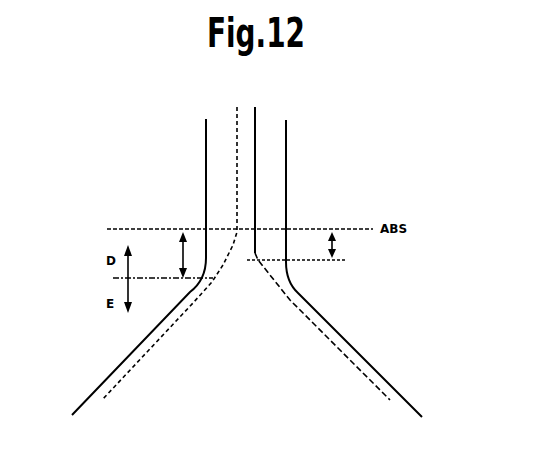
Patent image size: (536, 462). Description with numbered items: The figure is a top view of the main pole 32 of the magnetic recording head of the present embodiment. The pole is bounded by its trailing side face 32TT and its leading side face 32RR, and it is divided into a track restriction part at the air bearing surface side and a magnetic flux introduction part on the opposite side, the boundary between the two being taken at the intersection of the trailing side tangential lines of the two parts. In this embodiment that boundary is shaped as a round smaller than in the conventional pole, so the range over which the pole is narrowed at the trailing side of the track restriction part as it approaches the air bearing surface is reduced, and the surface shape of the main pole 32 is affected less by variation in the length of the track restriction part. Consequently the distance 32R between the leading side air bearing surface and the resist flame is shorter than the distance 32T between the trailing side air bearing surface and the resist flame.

The main pole 32 is at (165, 261).
The leading side face of the main pole 32RR is at (255, 147).
The trailing side face of the main pole 32TT is at (286, 187).
The distance between the trailing side ABS and the resist flame 32T is at (171, 255).
The distance between the leading side ABS and the resist flame 32R is at (347, 245).